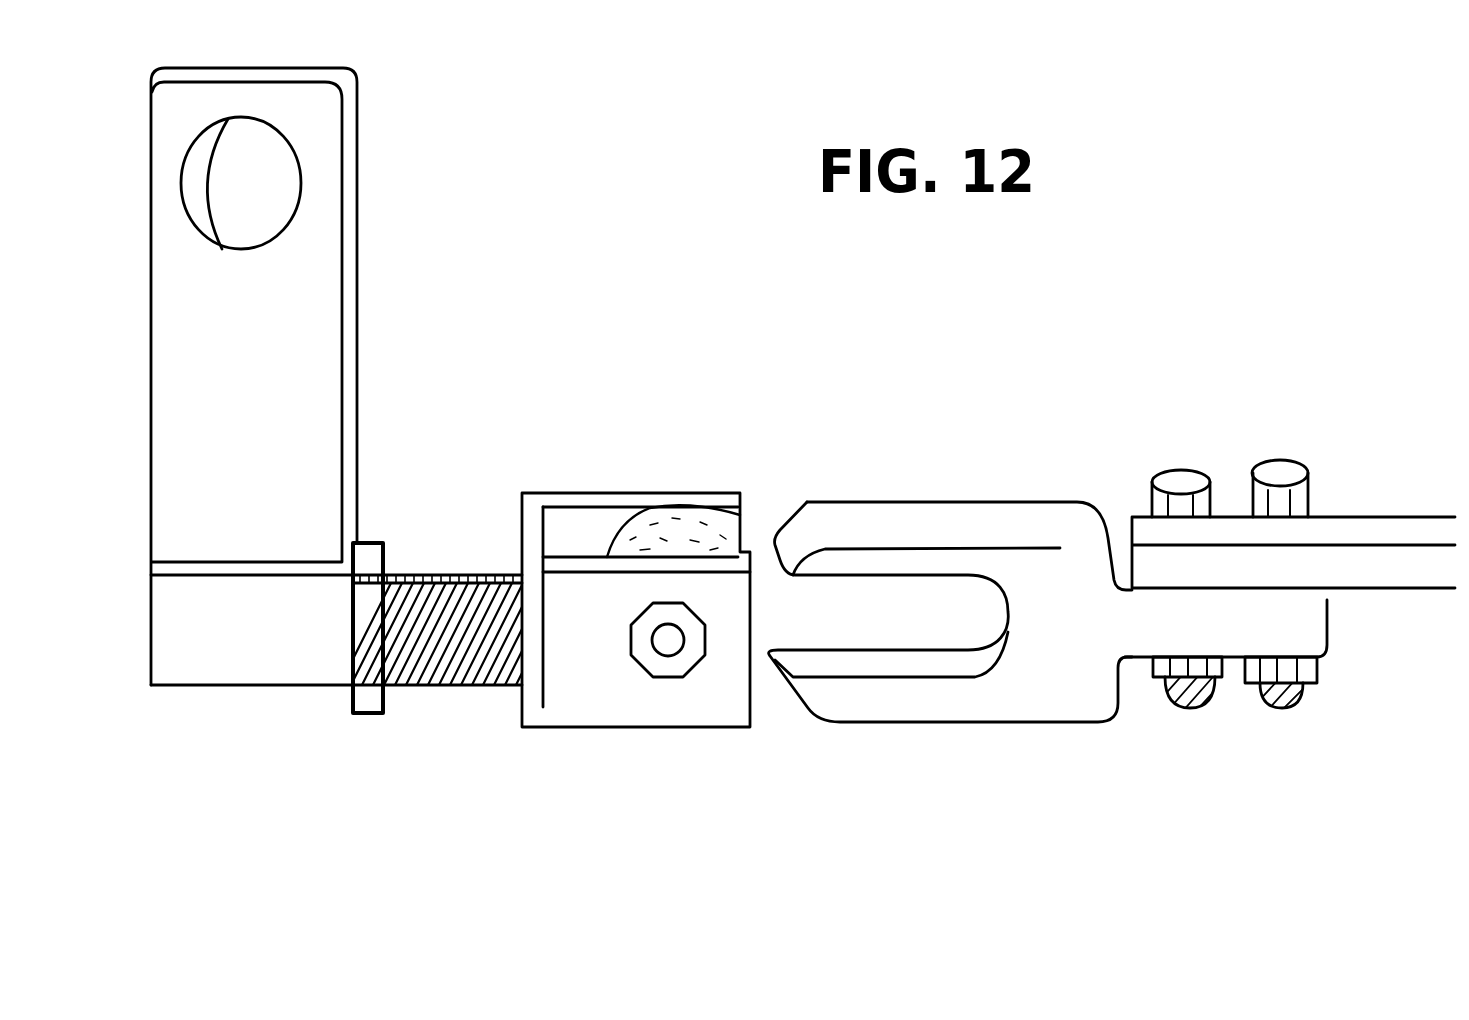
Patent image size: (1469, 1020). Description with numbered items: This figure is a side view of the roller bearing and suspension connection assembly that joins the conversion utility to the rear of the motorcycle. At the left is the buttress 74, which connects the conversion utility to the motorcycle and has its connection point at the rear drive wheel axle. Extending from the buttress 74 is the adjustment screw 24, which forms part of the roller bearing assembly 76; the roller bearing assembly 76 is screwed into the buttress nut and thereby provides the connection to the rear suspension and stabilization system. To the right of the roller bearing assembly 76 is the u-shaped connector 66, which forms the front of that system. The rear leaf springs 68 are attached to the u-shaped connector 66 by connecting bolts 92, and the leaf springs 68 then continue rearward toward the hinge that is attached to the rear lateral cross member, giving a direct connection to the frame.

The buttress 74 is at (322, 118).
The adjustment screw 24 is at (442, 697).
The roller bearing assembly 76 is at (668, 672).
The u-shaped connector 66 is at (950, 666).
The rear leaf springs 68 is at (1382, 527).
The connecting bolts 92 is at (1182, 480).